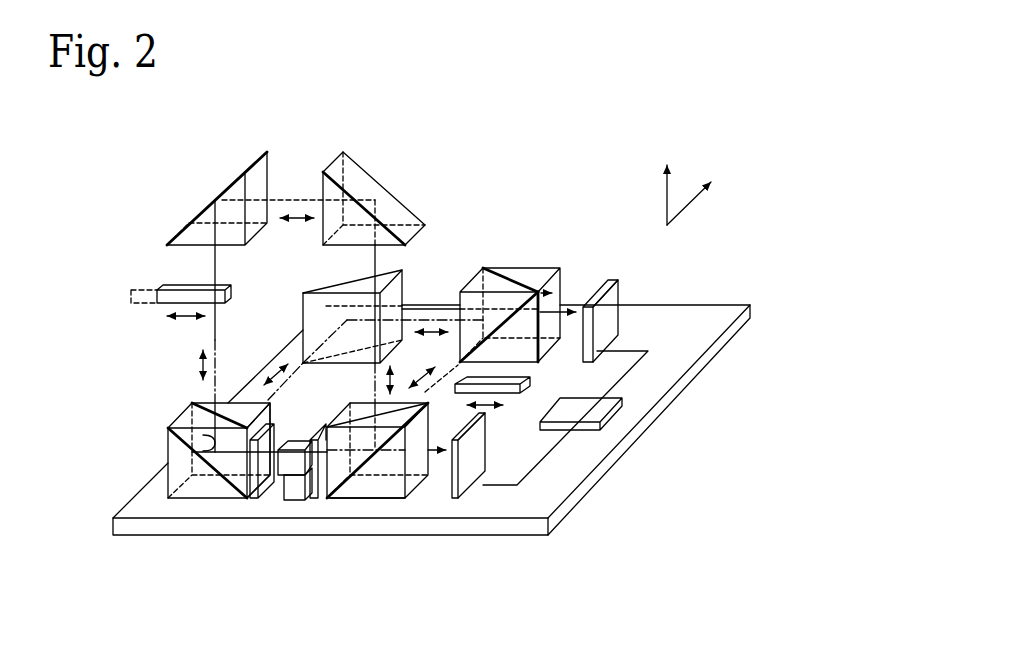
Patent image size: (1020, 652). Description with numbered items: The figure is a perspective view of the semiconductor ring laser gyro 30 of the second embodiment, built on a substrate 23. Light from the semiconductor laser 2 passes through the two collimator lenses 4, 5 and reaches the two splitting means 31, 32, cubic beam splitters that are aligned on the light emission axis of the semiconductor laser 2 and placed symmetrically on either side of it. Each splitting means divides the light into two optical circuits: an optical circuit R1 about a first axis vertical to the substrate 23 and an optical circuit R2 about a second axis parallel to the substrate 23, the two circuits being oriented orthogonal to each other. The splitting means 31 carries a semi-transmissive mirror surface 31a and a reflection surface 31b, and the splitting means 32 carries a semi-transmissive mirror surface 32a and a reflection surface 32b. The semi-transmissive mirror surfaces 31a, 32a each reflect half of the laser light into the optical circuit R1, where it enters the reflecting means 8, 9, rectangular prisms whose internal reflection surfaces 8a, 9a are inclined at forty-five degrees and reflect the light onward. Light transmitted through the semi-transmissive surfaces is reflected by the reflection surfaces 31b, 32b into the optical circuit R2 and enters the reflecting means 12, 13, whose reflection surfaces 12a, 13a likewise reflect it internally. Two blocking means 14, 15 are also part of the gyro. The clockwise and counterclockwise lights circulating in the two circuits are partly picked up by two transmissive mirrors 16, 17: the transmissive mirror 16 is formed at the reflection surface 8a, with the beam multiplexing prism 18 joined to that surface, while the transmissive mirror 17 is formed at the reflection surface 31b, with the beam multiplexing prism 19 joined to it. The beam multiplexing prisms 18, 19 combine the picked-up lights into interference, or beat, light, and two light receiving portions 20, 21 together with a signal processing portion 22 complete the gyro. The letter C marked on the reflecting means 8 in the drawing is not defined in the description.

The semiconductor laser 2 is at (292, 468).
The collimator lens 4 is at (312, 502).
The collimator lens 5 is at (257, 502).
The reflecting means 8 is at (519, 309).
The reflection surface 8a is at (545, 252).
The reflecting means 9 is at (330, 308).
The reflection surface 9a is at (340, 301).
The reflecting means 12 is at (392, 181).
The reflection surface 12a is at (390, 205).
The reflecting means 13 is at (215, 181).
The reflection surface 13a is at (243, 169).
The blocking means 14 is at (512, 392).
The blocking means 15 is at (175, 297).
The transmissive mirror 16 is at (612, 307).
The transmissive mirror 17 is at (474, 498).
The beam multiplexing prism 18 is at (556, 348).
The beam multiplexing prism 19 is at (387, 505).
The light receiving portion 20 is at (611, 325).
The light receiving portion 21 is at (487, 498).
The signal processing portion 22 is at (600, 409).
The substrate 23 is at (683, 340).
The semiconductor ring laser gyro 30 is at (507, 171).
The splitting means 31 is at (377, 479).
The semi-transmissive mirror surface 31a is at (356, 412).
The reflection surface 31b is at (361, 480).
The splitting means 32 is at (203, 490).
The semi-transmissive mirror surface 32a is at (272, 410).
The reflection surface 32b is at (167, 440).
The optical circuit R1 is at (437, 314).
The optical circuit R2 is at (300, 196).
The point C is at (521, 284).